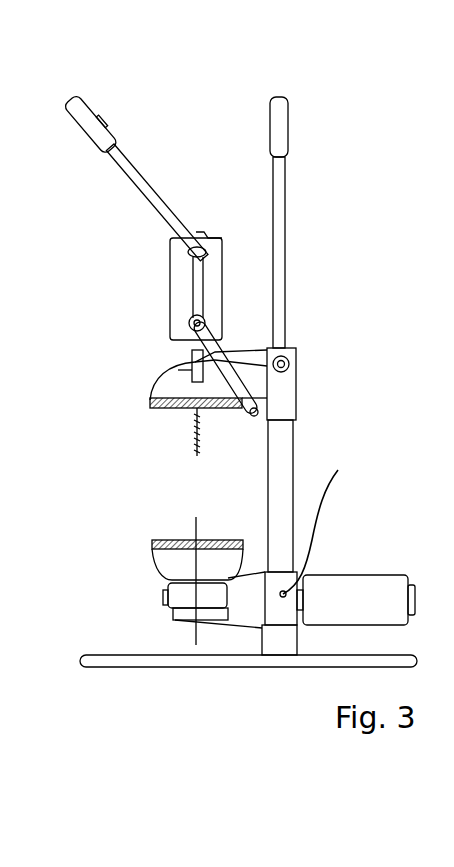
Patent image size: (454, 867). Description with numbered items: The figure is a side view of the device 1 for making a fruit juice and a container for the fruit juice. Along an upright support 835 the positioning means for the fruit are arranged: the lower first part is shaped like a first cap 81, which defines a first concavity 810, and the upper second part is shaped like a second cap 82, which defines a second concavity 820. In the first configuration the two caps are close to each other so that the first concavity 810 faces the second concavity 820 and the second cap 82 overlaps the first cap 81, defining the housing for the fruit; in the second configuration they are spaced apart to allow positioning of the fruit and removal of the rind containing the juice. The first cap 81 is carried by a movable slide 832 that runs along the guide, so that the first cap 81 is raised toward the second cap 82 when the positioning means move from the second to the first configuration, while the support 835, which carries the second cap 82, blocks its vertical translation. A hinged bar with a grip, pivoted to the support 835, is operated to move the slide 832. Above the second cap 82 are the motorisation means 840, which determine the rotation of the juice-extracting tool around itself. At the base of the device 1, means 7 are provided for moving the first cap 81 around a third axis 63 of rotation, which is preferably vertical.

The device 1 is at (334, 96).
The means for moving the first part 7 is at (347, 566).
The third axis of rotation 63 is at (190, 524).
The first cap 81 is at (156, 575).
The second cap 82 is at (155, 370).
The first concavity 810 is at (218, 528).
The second concavity 820 is at (166, 412).
The movable slide 832 is at (328, 520).
The support 835 is at (249, 343).
The motorisation means 840 is at (164, 286).